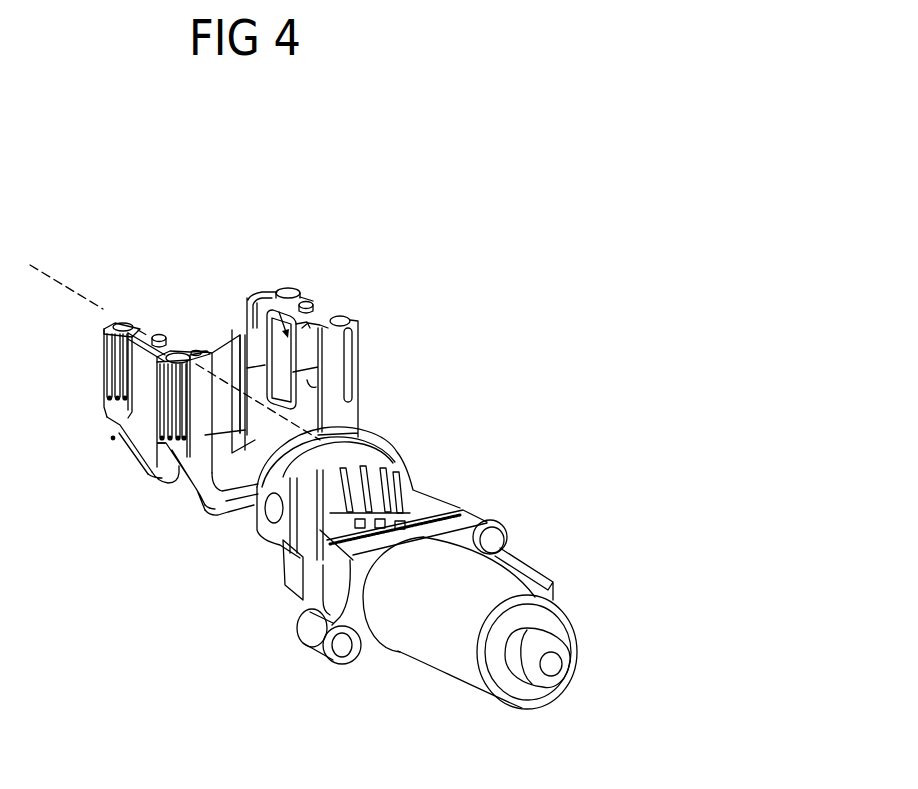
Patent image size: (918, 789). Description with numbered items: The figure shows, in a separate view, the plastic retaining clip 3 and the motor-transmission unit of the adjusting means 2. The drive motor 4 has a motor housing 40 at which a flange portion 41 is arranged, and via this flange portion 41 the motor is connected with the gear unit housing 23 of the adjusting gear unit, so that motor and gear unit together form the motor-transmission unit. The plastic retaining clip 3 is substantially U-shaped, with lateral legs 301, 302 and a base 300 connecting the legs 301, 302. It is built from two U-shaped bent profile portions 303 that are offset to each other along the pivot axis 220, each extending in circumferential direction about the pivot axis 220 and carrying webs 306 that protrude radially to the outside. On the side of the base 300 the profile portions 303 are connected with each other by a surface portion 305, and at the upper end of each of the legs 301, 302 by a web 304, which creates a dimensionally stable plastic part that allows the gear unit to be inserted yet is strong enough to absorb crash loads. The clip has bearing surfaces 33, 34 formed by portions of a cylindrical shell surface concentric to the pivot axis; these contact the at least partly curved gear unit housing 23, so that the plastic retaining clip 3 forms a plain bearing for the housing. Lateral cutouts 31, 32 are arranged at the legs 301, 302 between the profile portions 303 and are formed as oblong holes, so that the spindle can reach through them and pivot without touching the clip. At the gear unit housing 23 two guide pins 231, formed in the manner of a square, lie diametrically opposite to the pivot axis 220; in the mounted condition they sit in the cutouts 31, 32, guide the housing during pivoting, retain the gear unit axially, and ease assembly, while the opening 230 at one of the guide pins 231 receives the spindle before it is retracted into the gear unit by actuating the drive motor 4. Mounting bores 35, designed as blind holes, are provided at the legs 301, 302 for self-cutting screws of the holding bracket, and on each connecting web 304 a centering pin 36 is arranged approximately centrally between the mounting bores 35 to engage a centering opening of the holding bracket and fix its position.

The adjusting means 2 is at (294, 606).
The plastic retaining clip 3 is at (135, 505).
The drive motor 4 is at (558, 620).
The gear unit housing 23 is at (355, 445).
The lateral cutout 31 is at (140, 393).
The lateral cutout 32 is at (262, 290).
The bearing surface 33 is at (223, 460).
The bearing surface 34 is at (313, 384).
The mounting bore 35 is at (112, 331).
The centering pin 36 is at (160, 334).
The motor housing 40 is at (446, 655).
The flange portion 41 is at (372, 648).
The pivot axis 220 is at (87, 300).
The opening 230 is at (278, 518).
The guide pin 231 is at (413, 473).
The base 300 is at (233, 503).
The lateral leg 301 is at (200, 467).
The lateral leg 302 is at (342, 412).
The profile portion 303 is at (163, 462).
The web 304 is at (140, 328).
The surface portion 305 is at (238, 333).
The web 306 is at (147, 483).